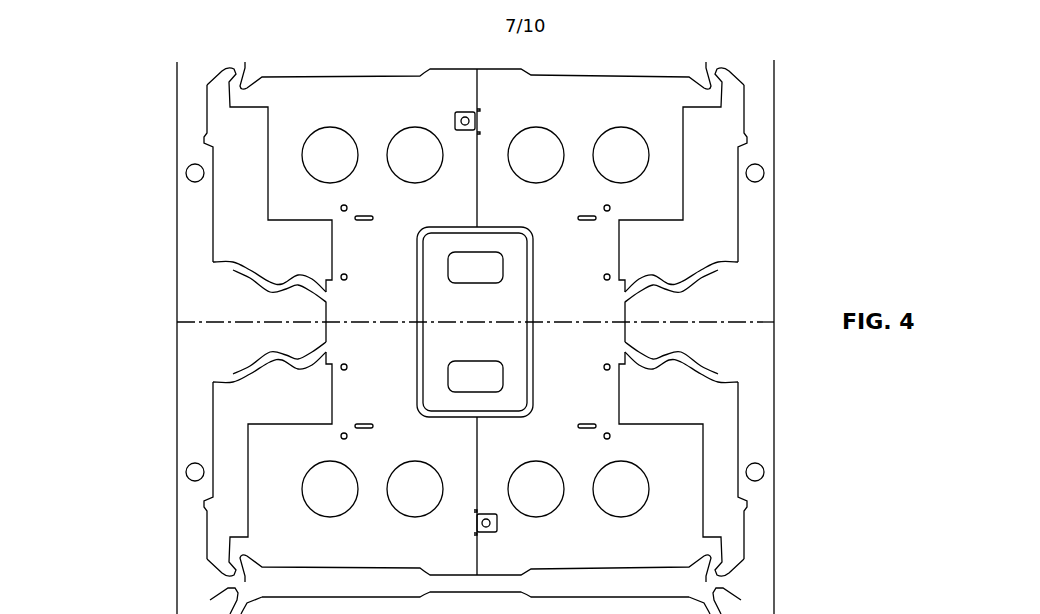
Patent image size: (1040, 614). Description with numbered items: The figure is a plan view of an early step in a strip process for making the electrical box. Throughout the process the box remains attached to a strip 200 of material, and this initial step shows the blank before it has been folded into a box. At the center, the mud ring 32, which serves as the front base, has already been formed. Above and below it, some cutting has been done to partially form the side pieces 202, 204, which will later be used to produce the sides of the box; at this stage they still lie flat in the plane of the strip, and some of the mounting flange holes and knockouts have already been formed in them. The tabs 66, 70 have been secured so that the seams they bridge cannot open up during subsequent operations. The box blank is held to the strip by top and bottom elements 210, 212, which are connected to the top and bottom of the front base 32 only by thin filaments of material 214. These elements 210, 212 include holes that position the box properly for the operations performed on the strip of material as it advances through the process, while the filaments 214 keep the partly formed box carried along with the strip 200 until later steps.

The strip 200 is at (806, 120).
The side piece 202 is at (623, 98).
The side piece 204 is at (703, 516).
The top element 210 is at (774, 497).
The bottom element 212 is at (213, 430).
The thin filaments of material 214 is at (237, 373).
The mud ring 32 is at (535, 357).
The tab 66 is at (455, 112).
The tab 70 is at (482, 523).